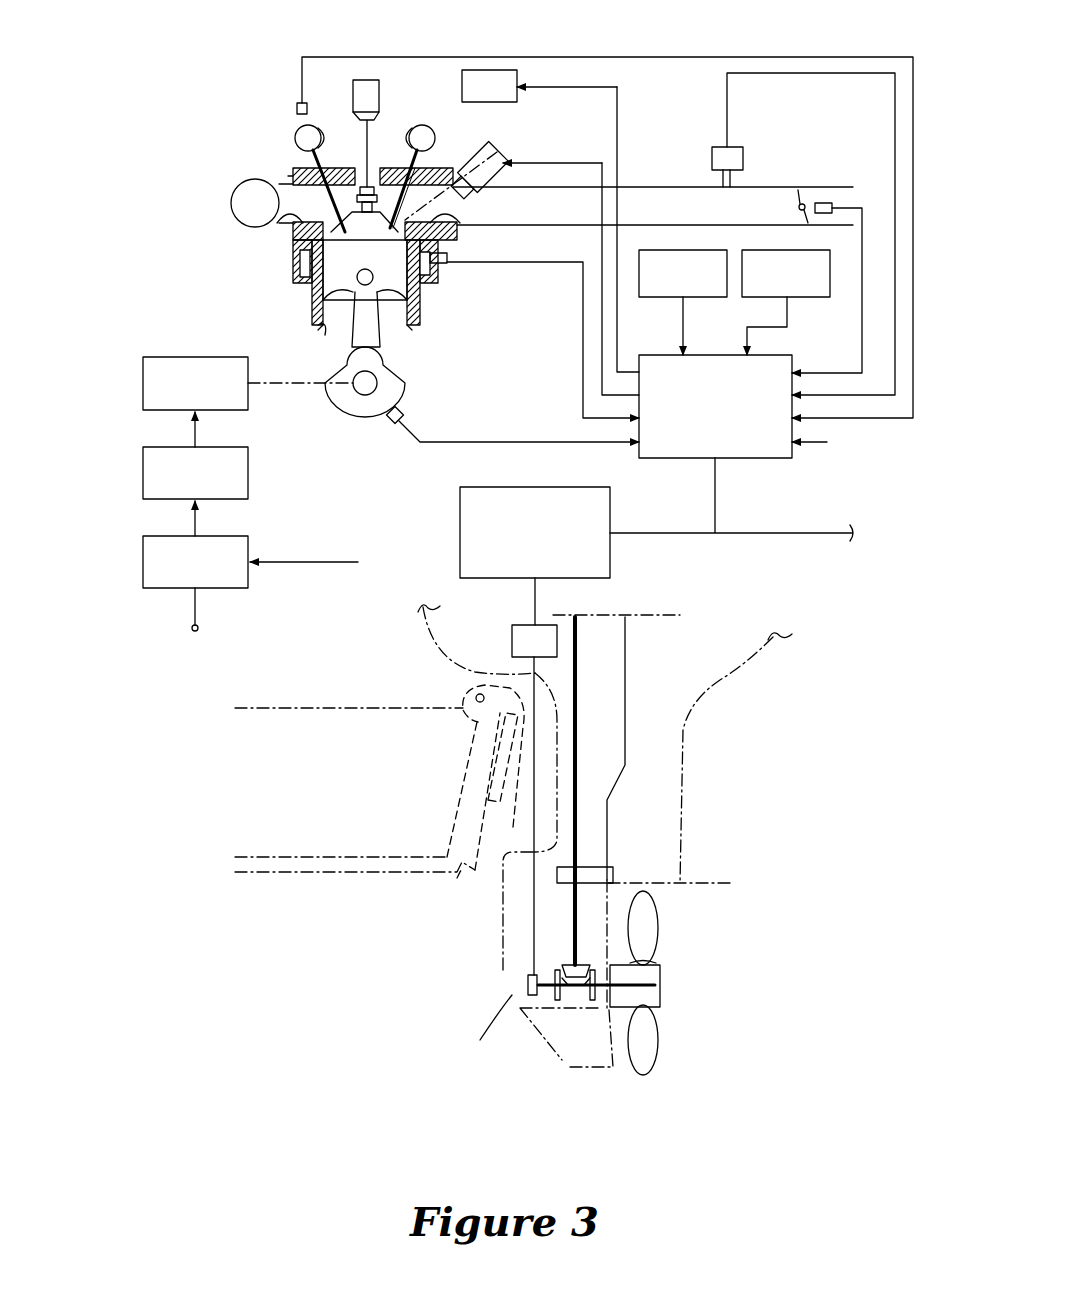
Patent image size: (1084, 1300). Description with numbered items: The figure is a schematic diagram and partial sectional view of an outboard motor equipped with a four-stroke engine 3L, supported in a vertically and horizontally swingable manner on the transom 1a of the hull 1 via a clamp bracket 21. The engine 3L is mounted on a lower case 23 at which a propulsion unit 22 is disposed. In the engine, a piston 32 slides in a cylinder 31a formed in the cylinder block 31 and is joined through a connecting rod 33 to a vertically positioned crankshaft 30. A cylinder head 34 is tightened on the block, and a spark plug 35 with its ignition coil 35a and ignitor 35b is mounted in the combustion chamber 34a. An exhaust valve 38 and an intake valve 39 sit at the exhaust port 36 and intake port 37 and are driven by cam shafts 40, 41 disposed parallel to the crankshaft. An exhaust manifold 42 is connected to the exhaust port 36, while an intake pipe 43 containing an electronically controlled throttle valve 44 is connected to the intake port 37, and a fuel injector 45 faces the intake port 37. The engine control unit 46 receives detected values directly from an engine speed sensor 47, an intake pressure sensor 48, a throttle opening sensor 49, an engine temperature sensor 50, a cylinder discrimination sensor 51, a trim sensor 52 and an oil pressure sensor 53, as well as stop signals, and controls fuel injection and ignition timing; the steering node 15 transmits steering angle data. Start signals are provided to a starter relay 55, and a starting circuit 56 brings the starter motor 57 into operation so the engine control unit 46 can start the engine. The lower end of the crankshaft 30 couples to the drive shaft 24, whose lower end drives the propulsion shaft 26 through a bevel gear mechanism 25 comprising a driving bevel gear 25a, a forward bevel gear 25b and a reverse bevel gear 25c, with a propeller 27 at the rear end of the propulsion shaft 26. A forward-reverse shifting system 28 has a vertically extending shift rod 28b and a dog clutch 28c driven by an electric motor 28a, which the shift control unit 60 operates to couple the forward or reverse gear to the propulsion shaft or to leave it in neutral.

The engine 3L is at (272, 82).
The cylinder head 34 is at (292, 176).
The exhaust manifold 42 is at (231, 195).
The exhaust port 36 is at (282, 222).
The cam shaft 40 is at (295, 132).
The cam shaft 41 is at (428, 135).
The exhaust valve 38 is at (345, 167).
The intake valve 39 is at (422, 172).
The spark plug 35 is at (372, 186).
The ignition coil 35a is at (367, 78).
The cylinder discrimination sensor 51 is at (308, 106).
The ignitor 35b is at (488, 68).
The fuel injector 45 is at (500, 145).
The intake port 37 is at (458, 223).
The intake pipe 43 is at (525, 228).
The combustion chamber 34a is at (297, 265).
The cylinder block 31 is at (310, 298).
The engine temperature sensor 50 is at (450, 265).
The piston 32 is at (410, 297).
The cylinder 31a is at (325, 333).
The connecting rod 33 is at (380, 335).
The crankshaft 30 is at (400, 380).
The engine speed sensor 47 is at (405, 415).
The intake pressure sensor 48 is at (712, 150).
The electronically controlled throttle valve 44 is at (798, 192).
The throttle opening sensor 49 is at (824, 202).
The trim sensor 52 is at (703, 297).
The oil pressure sensor 53 is at (818, 297).
The engine control unit 46 is at (760, 452).
The steering node 15 is at (785, 537).
The starter motor 57 is at (142, 380).
The starting circuit 56 is at (142, 468).
The starter relay 55 is at (142, 558).
The shift control unit 60 is at (459, 512).
The electric motor 28a is at (510, 640).
The shift rod 28b is at (534, 937).
The drive shaft 24 is at (578, 680).
The lower case 23 is at (757, 703).
The hull 1 is at (321, 876).
The clamp bracket 21 is at (486, 777).
The transom 1a is at (455, 884).
The driving bevel gear 25a is at (578, 965).
The bevel gear mechanism 25 is at (573, 1012).
The forward bevel gear 25b is at (553, 1012).
The reverse bevel gear 25c is at (603, 1015).
The propulsion shaft 26 is at (652, 980).
The propulsion unit 22 is at (672, 935).
The propeller 27 is at (660, 1040).
The dog clutch 28c is at (528, 988).
The forward-reverse shifting system 28 is at (495, 996).